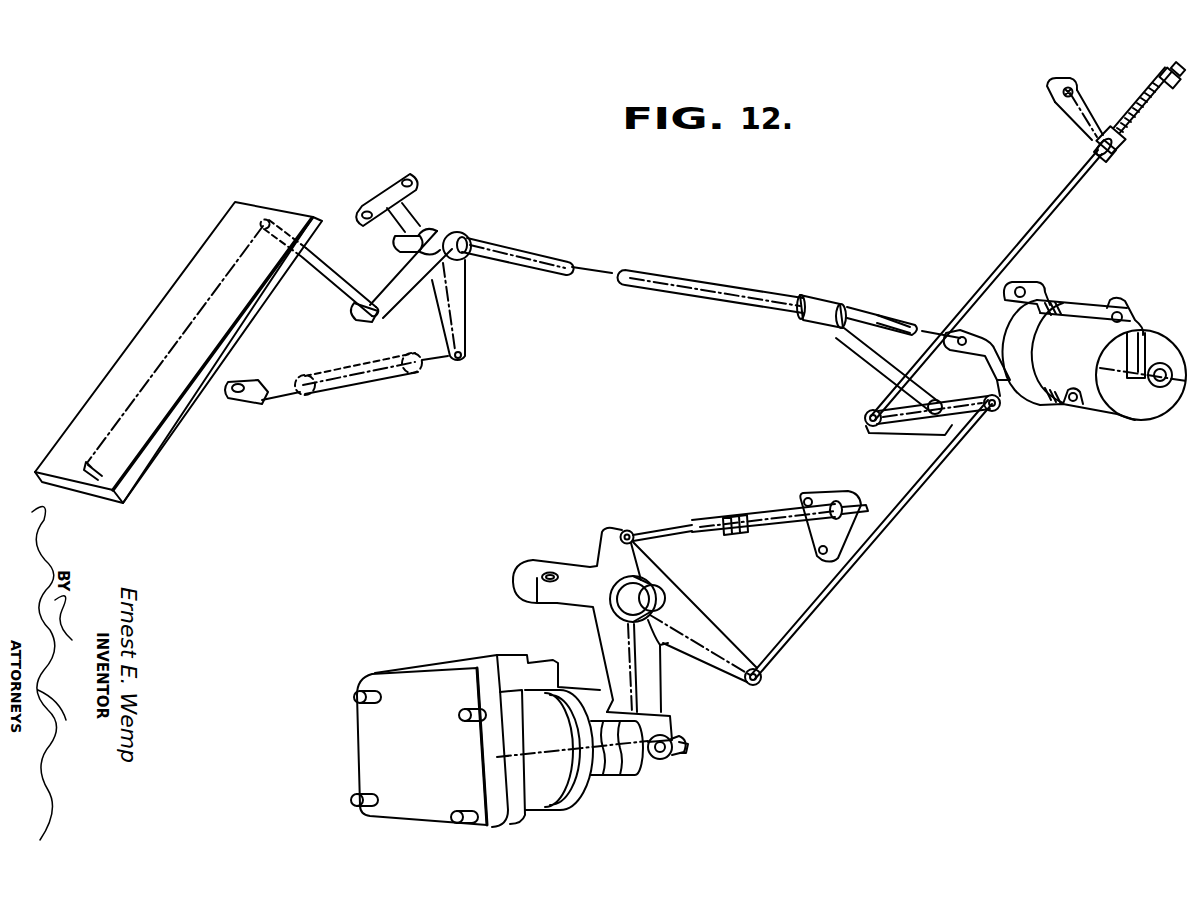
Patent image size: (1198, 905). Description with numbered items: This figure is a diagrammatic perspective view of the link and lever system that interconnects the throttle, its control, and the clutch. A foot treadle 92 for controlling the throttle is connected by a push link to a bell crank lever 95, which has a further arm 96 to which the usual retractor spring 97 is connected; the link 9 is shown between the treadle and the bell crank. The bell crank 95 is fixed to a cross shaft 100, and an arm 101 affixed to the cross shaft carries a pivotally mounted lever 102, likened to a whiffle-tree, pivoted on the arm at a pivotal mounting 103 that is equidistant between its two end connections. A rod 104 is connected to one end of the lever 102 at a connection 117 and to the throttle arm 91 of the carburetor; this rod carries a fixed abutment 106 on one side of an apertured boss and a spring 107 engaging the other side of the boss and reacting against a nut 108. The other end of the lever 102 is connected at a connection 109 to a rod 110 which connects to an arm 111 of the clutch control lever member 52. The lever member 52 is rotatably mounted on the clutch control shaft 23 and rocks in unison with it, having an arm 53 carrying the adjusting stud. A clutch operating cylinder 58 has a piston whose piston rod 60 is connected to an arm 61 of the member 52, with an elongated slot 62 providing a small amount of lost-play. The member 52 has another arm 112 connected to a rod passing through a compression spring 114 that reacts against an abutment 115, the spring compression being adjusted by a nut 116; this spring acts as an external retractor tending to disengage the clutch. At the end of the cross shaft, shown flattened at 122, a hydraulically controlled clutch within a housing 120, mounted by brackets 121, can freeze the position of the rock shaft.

The link 9 is at (397, 298).
The clutch control shaft 23 is at (525, 567).
The lever member 52 is at (657, 598).
The arm 53 is at (583, 602).
The clutch operating cylinder 58 is at (537, 783).
The piston rod 60 is at (687, 732).
The arm 61 is at (655, 683).
The elongated slot 62 is at (685, 747).
The throttle arm 91 is at (1083, 107).
The foot treadle 92 is at (210, 257).
The bell crank lever 95 is at (450, 232).
The arm 96 is at (460, 327).
The retractor spring 97 is at (365, 385).
The cross shaft 100 is at (720, 290).
The arm 101 is at (857, 360).
The lever 102 is at (903, 423).
The pivotal mounting 103 is at (940, 434).
The rod 104 is at (1010, 240).
The fixed abutment 106 is at (1113, 162).
The spring 107 is at (1133, 127).
The nut 108 is at (1163, 66).
The connection 109 is at (1000, 423).
The rod 110 is at (853, 560).
The arm 111 is at (715, 643).
The arm 112 is at (633, 558).
The compression spring 114 is at (763, 513).
The abutment 115 is at (813, 545).
The nut 116 is at (733, 512).
The connection 117 is at (866, 420).
The housing 120 is at (1073, 307).
The brackets 121 is at (1040, 283).
The flattened end 122 is at (903, 317).